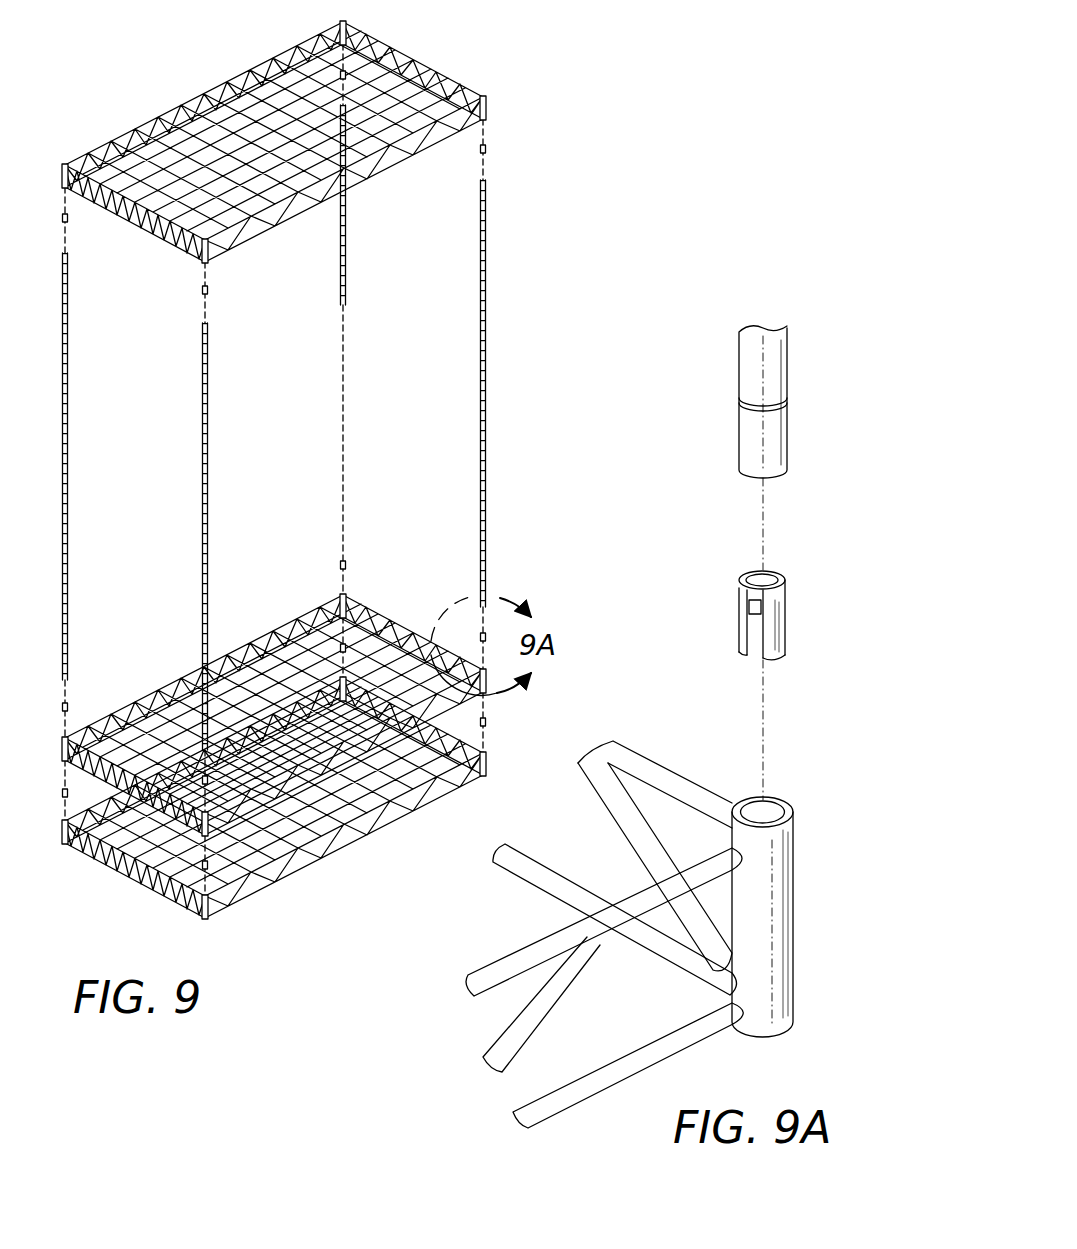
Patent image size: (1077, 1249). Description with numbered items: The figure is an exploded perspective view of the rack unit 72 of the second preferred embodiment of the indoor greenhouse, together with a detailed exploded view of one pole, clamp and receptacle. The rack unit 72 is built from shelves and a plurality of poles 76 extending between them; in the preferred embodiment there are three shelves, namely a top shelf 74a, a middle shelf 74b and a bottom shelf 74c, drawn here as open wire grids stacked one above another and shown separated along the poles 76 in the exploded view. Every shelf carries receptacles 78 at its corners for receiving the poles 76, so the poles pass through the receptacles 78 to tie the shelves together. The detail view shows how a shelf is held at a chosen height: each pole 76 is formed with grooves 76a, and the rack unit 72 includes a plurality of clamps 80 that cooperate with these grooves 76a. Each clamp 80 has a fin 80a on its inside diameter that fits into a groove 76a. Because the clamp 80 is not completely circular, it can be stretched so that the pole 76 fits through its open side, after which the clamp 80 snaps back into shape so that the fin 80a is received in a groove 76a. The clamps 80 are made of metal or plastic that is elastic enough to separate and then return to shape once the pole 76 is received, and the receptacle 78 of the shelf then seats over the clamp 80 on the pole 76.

In FIG. 9, the rack unit 72 is at (583, 152).
In FIG. 9, the top shelf 74a is at (435, 78).
In FIG. 9, the middle shelf 74b is at (362, 600).
In FIG. 9A, the middle shelf 74b is at (490, 963).
In FIG. 9, the bottom shelf 74c is at (297, 867).
In FIG. 9, the pole 76 is at (478, 300).
In FIG. 9A, the pole 76 is at (745, 347).
In FIG. 9A, the groove 76a is at (743, 405).
In FIG. 9, the receptacle 78 is at (487, 112).
In FIG. 9A, the receptacle 78 is at (778, 878).
In FIG. 9, the clamp 80 is at (208, 292).
In FIG. 9A, the clamp 80 is at (775, 600).
In FIG. 9A, the fin 80a is at (755, 593).